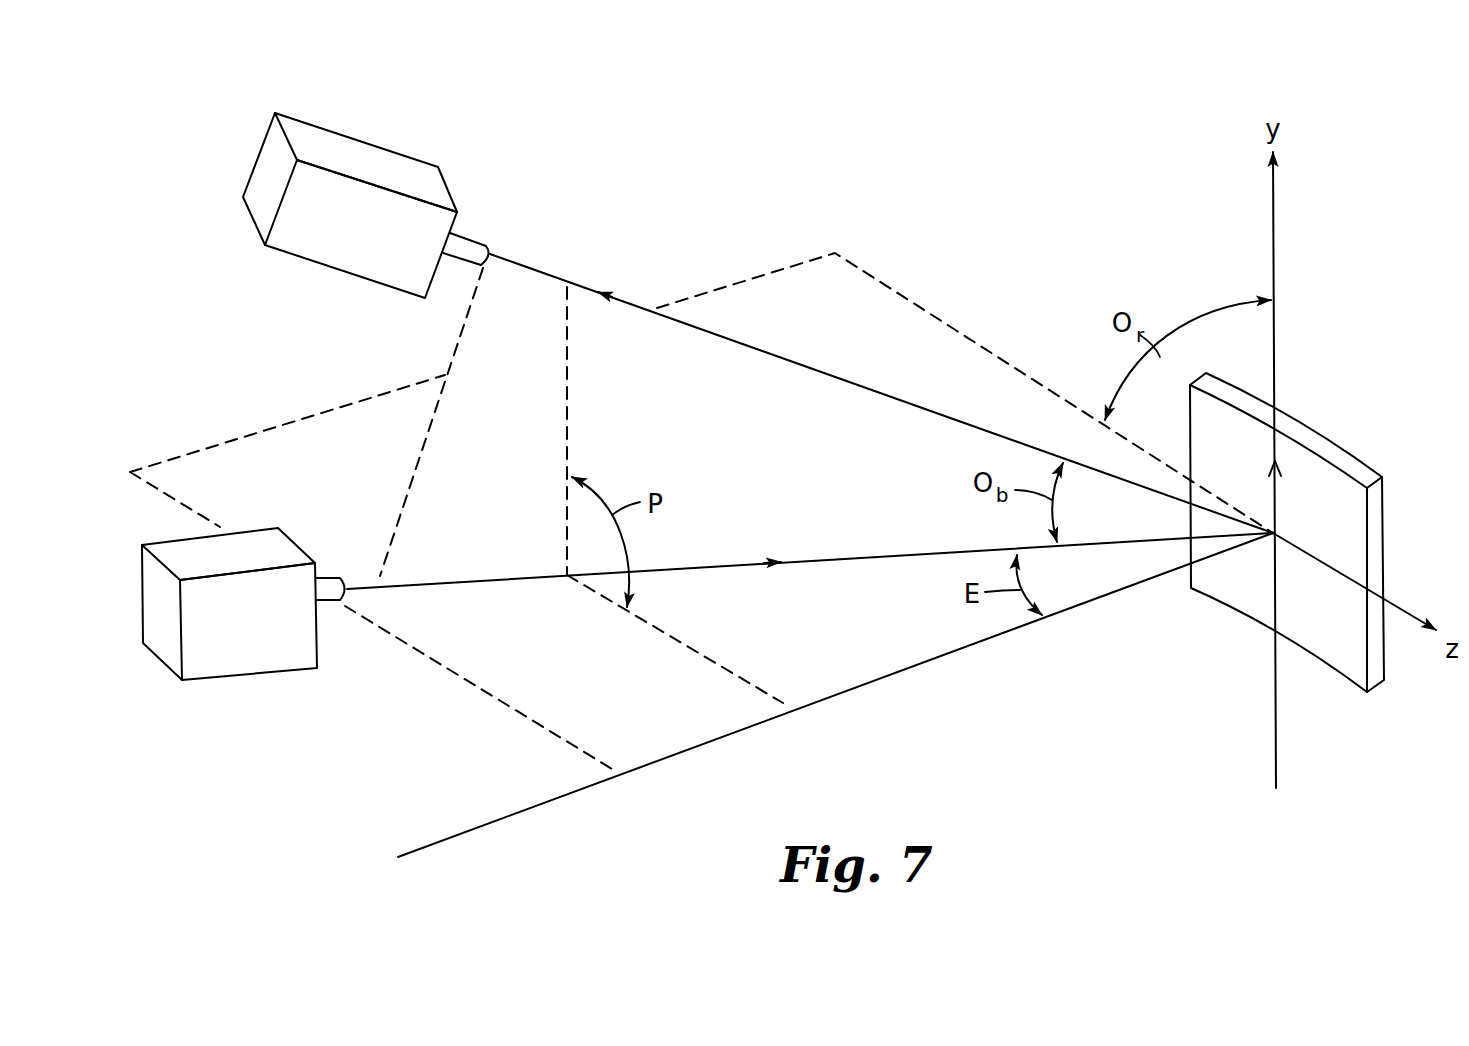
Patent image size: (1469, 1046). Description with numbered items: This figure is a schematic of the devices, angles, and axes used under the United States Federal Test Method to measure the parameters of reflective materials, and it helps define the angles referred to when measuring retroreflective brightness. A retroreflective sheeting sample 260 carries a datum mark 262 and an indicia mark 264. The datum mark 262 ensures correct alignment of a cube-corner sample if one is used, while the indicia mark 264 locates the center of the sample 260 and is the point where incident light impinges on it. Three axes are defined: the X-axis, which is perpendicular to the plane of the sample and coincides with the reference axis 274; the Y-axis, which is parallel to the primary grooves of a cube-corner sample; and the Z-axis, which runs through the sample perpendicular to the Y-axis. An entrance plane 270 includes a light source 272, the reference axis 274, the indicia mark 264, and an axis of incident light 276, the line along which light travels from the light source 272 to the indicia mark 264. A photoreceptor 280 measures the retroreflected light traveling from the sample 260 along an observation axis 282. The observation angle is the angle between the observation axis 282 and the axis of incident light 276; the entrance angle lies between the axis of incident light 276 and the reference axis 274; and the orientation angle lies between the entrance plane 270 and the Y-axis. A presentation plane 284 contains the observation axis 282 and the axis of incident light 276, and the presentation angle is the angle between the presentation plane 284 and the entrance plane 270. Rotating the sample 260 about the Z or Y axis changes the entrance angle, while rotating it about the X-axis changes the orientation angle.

The retroreflective sheeting sample 260 is at (1337, 662).
The datum mark 262 is at (1281, 472).
The indicia mark 264 is at (1270, 537).
The entrance plane 270 is at (530, 686).
The light source 272 is at (258, 652).
The reference axis 274 is at (705, 742).
The axis of incident light 276 is at (842, 555).
The photoreceptor 280 is at (347, 255).
The observation axis 282 is at (775, 355).
The presentation plane 284 is at (430, 468).